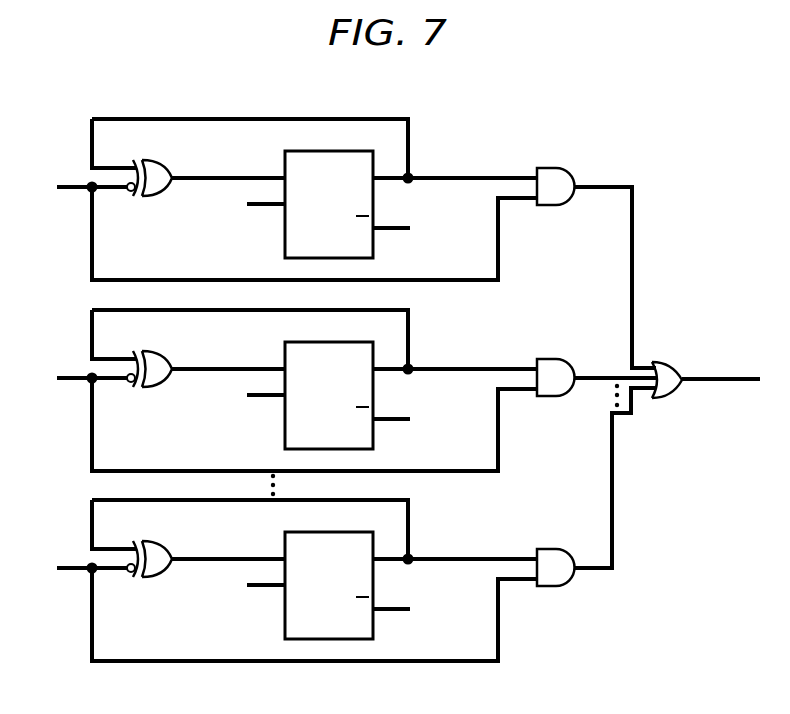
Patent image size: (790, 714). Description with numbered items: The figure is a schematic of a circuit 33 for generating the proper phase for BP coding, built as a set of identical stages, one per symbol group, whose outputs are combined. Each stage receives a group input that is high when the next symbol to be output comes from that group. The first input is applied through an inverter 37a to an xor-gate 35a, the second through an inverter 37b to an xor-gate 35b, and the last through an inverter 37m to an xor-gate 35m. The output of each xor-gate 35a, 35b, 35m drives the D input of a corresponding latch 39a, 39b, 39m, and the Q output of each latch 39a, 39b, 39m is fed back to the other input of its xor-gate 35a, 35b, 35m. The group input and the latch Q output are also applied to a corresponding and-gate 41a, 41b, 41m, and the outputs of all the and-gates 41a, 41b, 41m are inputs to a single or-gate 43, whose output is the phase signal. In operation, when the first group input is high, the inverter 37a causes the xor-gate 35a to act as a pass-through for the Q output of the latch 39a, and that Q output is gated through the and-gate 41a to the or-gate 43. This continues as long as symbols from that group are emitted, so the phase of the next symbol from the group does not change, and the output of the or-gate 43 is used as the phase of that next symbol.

The circuit 33 is at (487, 68).
The xor-gate 35a is at (160, 163).
The xor-gate 35b is at (160, 354).
The xor-gate 35m is at (160, 544).
The inverter 37a is at (128, 192).
The inverter 37b is at (128, 383).
The inverter 37m is at (128, 573).
The latch 39a is at (285, 236).
The latch 39b is at (285, 427).
The latch 39m is at (285, 617).
The and-gate 41a is at (557, 168).
The and-gate 41b is at (557, 359).
The and-gate 41m is at (557, 549).
The or-gate 43 is at (670, 395).